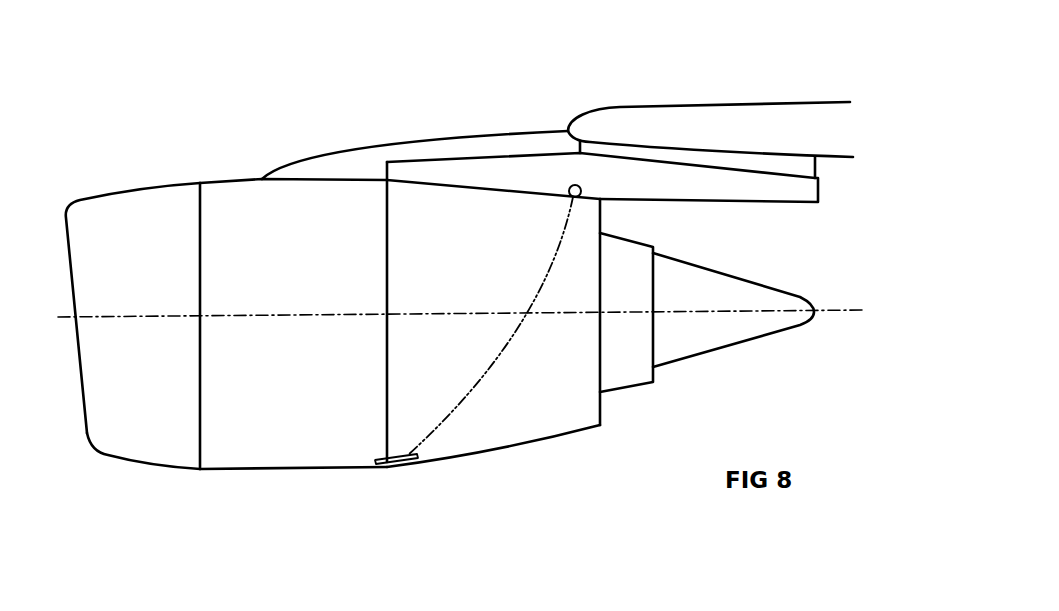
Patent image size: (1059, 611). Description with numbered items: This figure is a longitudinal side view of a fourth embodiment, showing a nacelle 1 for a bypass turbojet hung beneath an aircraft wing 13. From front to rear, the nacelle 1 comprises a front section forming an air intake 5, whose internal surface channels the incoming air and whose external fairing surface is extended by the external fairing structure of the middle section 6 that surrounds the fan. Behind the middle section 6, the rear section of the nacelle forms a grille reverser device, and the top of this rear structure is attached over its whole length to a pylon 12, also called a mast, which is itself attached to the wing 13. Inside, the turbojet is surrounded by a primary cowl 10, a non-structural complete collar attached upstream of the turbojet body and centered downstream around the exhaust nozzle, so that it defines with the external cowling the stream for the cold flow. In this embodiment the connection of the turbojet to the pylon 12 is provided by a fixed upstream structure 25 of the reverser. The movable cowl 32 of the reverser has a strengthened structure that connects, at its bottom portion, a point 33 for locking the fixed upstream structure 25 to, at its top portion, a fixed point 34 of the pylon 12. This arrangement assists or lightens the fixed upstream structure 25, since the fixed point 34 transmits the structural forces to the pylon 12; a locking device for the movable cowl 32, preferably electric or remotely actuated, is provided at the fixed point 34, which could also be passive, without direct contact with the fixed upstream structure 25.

The nacelle 1 is at (107, 140).
The air intake 5 is at (130, 463).
The middle section 6 is at (263, 477).
The primary cowl 10 is at (640, 380).
The pylon 12 is at (467, 170).
The wing 13 is at (703, 125).
The fixed upstream structure 25 is at (408, 210).
The movable cowl 32 is at (547, 387).
The locking point 33 is at (388, 472).
The fixed point 34 is at (567, 188).